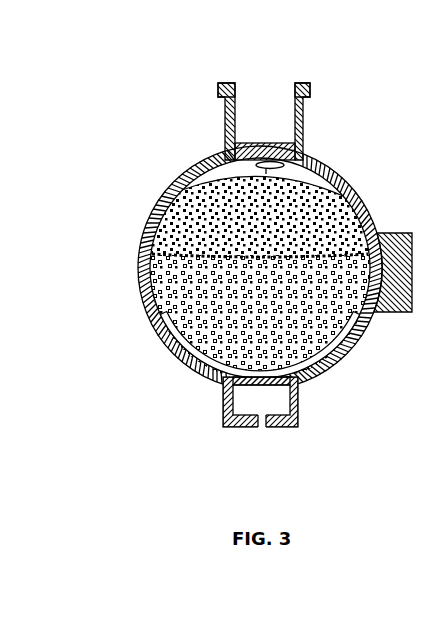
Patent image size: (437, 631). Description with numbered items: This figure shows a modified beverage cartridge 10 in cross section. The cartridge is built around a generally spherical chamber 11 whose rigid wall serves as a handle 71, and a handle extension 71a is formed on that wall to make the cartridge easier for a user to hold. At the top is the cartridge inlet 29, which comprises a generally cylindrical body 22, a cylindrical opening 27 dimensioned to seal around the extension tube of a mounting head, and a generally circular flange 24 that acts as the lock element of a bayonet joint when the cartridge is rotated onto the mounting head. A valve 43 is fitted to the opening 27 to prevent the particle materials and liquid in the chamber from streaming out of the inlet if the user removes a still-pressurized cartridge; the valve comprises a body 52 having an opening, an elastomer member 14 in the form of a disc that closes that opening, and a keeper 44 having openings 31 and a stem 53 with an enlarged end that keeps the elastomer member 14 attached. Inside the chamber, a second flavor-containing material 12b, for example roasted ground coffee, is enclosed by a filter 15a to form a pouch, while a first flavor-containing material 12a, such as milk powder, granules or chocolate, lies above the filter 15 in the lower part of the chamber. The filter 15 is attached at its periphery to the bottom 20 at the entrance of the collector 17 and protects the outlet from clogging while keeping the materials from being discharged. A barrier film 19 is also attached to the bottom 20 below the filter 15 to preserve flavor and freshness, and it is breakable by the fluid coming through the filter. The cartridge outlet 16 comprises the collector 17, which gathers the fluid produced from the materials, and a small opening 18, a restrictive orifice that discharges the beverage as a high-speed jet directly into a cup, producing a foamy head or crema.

The cartridge 10 is at (190, 75).
The spherical chamber 11 is at (368, 204).
The first flavor-containing materials or particle materials 12a is at (187, 311).
The second flavor-containing materials or particle materials 12b is at (160, 222).
The elastomer member 14 is at (196, 170).
The filter 15 is at (333, 372).
The filter 15a is at (190, 257).
The cartridge outlet 16 is at (304, 413).
The collection chamber or collector 17 is at (273, 398).
The opening 18 is at (262, 420).
The barrier film 19 is at (245, 387).
The bottom 20 is at (190, 370).
The cylindrical body 22 is at (224, 122).
The circular flange 24 is at (217, 91).
The cylindrical opening 27 is at (242, 92).
The cartridge inlet 29 is at (318, 112).
The openings 31 is at (255, 143).
The valve 43 is at (268, 128).
The keeper 44 is at (286, 148).
The valve body 52 is at (303, 152).
The stem 53 is at (335, 180).
The handle 71 is at (367, 350).
The handle extension 71a is at (399, 312).